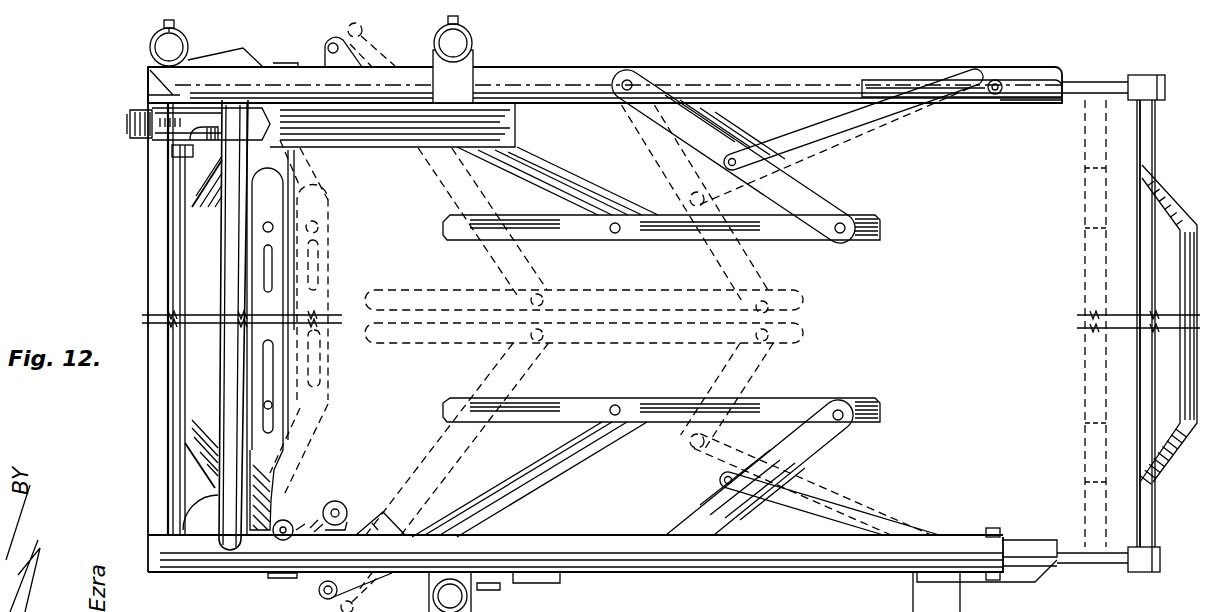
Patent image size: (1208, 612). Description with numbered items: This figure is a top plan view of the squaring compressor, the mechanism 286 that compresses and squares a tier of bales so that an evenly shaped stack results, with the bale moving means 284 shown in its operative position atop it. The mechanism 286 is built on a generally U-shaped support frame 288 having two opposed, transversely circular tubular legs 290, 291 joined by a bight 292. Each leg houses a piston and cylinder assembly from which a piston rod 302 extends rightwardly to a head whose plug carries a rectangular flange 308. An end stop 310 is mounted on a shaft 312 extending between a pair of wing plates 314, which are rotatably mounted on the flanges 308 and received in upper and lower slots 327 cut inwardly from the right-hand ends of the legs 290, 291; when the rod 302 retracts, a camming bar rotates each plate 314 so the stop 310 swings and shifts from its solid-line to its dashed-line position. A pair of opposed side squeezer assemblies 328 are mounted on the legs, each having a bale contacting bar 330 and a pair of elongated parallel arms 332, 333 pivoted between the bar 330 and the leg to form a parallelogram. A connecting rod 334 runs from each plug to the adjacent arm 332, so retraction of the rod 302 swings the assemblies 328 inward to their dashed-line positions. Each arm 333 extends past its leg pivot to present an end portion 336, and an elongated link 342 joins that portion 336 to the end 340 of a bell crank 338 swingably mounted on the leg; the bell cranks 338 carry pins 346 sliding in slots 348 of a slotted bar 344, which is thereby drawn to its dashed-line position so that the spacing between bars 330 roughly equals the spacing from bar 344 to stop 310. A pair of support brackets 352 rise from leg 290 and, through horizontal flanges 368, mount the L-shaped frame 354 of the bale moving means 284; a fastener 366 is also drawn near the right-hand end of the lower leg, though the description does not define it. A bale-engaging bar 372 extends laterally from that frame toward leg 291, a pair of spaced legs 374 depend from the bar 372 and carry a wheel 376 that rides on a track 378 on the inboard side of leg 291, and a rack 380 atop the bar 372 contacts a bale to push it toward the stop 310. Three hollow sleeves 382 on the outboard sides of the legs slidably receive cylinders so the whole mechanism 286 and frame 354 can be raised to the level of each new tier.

The bale moving means 284 is at (205, 218).
The mechanism 286 is at (140, 398).
The support frame 288 is at (582, 66).
The leg 290 is at (1020, 538).
The leg 291 is at (697, 78).
The bight 292 is at (152, 262).
The piston rod 302 is at (906, 82).
The rectangular flange 308 is at (1030, 80).
The end stop 310 is at (1178, 455).
The shaft 312 is at (1156, 508).
The wing plate 314 is at (1075, 80).
The slot 327 is at (1024, 112).
The side squeezer assembly 328 is at (870, 213).
The bale contacting bar 330 is at (878, 240).
The arm 332 is at (712, 118).
The arm 333 is at (545, 178).
The connecting rod 334 is at (905, 120).
The end portion 336 is at (323, 41).
The bell crank 338 is at (281, 180).
The bell crank end 340 is at (330, 504).
The link 342 is at (320, 587).
The slotted bar 344 is at (284, 328).
The pin 346 is at (274, 405).
The slot 348 is at (275, 262).
The support bracket 352 is at (962, 583).
The frame 354 is at (210, 455).
The nut 366 is at (992, 528).
The horizontal flange 368 is at (915, 578).
The bale-engaging bar 372 is at (221, 248).
The leg 374 is at (150, 98).
The wheel 376 is at (200, 152).
The track 378 is at (515, 118).
The rack 380 is at (232, 338).
The hollow sleeve 382 is at (188, 37).